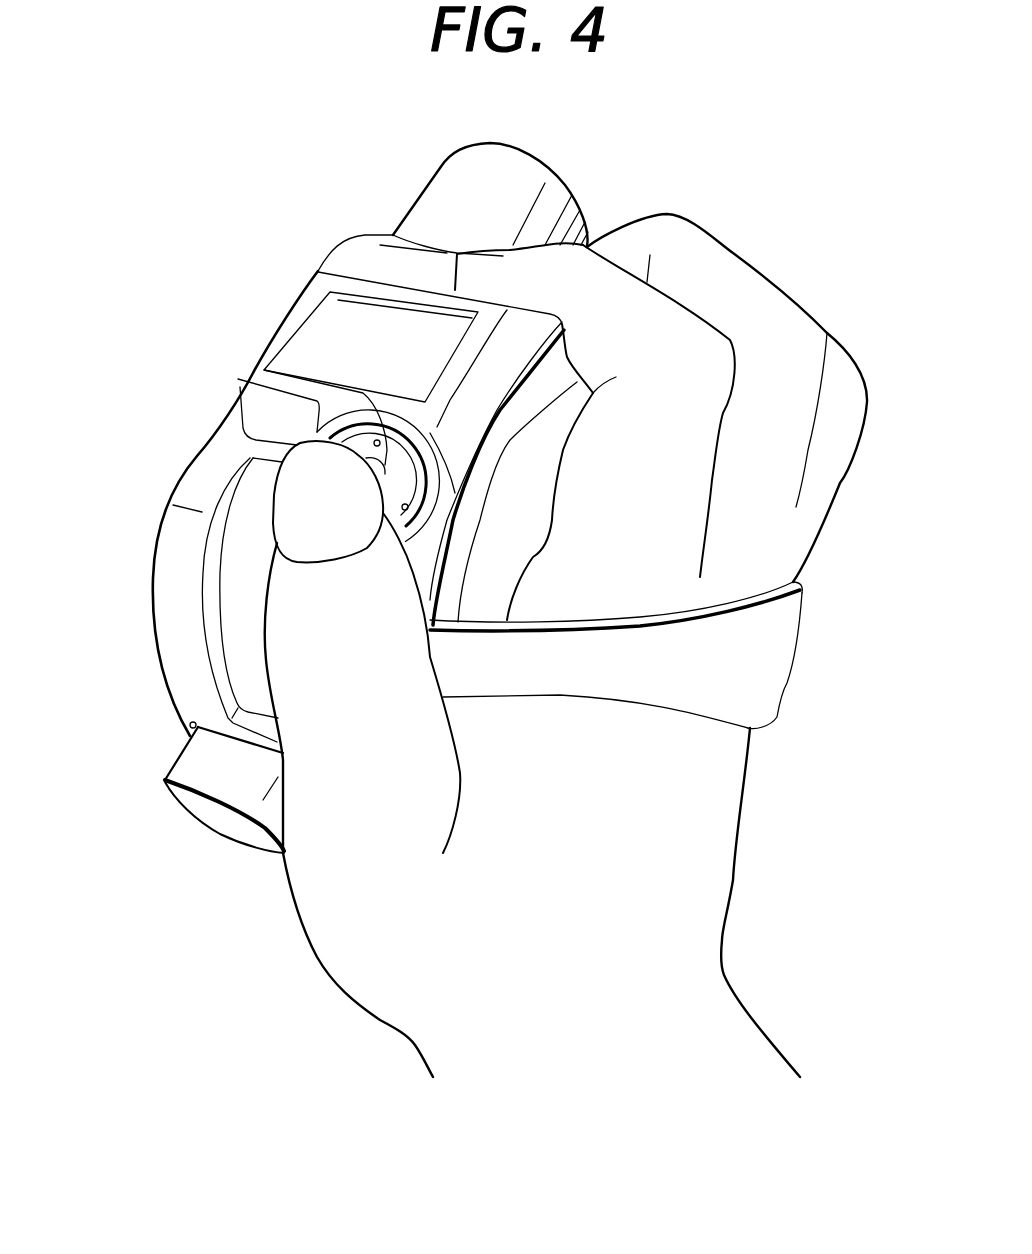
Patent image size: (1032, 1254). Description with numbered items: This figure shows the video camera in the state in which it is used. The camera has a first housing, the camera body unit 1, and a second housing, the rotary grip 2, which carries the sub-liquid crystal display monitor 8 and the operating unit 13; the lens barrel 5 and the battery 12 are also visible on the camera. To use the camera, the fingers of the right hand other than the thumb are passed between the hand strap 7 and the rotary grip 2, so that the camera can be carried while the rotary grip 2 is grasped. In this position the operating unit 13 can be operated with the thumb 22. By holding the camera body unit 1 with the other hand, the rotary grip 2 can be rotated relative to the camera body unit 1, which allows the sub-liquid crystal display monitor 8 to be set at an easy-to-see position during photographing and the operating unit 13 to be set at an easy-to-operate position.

The first housing 1 is at (167, 628).
The second housing 2 is at (533, 453).
The lens barrel 5 is at (440, 177).
The hand strap 7 is at (743, 642).
The liquid crystal display monitor 8 is at (328, 337).
The battery 12 is at (230, 823).
The operating unit 13 is at (266, 367).
The thumb 22 is at (287, 596).